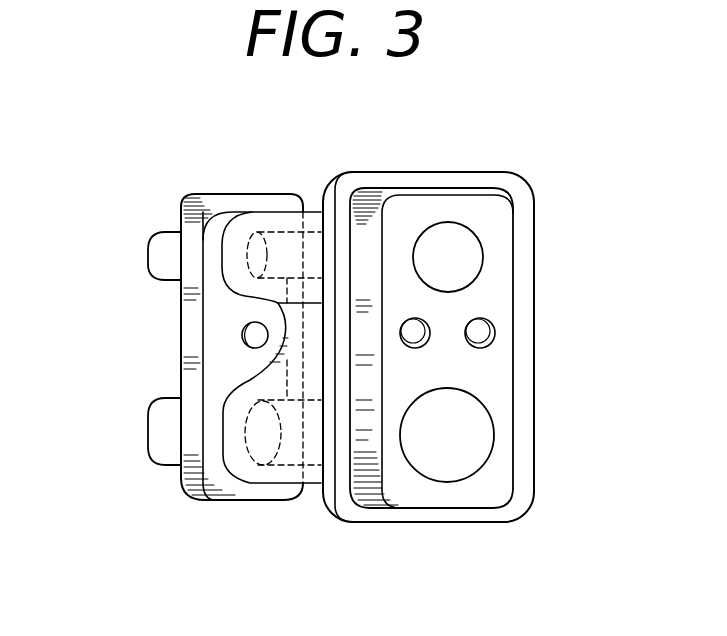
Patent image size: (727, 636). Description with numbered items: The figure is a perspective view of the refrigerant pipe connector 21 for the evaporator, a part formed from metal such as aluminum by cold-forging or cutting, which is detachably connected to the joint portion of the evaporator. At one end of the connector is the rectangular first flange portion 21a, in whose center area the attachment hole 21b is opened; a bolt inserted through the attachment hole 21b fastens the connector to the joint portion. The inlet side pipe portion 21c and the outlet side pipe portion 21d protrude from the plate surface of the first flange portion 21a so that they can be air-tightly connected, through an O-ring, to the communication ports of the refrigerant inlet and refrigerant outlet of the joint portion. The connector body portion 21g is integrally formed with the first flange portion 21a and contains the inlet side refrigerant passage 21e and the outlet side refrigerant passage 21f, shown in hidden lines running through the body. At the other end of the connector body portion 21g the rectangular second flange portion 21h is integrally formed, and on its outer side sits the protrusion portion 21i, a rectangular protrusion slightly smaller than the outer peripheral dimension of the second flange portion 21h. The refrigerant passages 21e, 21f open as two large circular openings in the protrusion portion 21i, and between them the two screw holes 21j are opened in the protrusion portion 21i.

The refrigerant pipe connector 21 is at (465, 353).
The first flange portion 21a is at (191, 353).
The attachment hole 21b is at (247, 337).
The inlet side pipe portion 21c is at (140, 238).
The outlet side pipe portion 21d is at (147, 436).
The inlet side refrigerant passage 21e is at (260, 232).
The outlet side refrigerant passage 21f is at (303, 483).
The connector body portion 21g is at (260, 473).
The second flange portion 21h is at (456, 523).
The protrusion portion 21i is at (368, 225).
The screw holes 21j is at (418, 330).